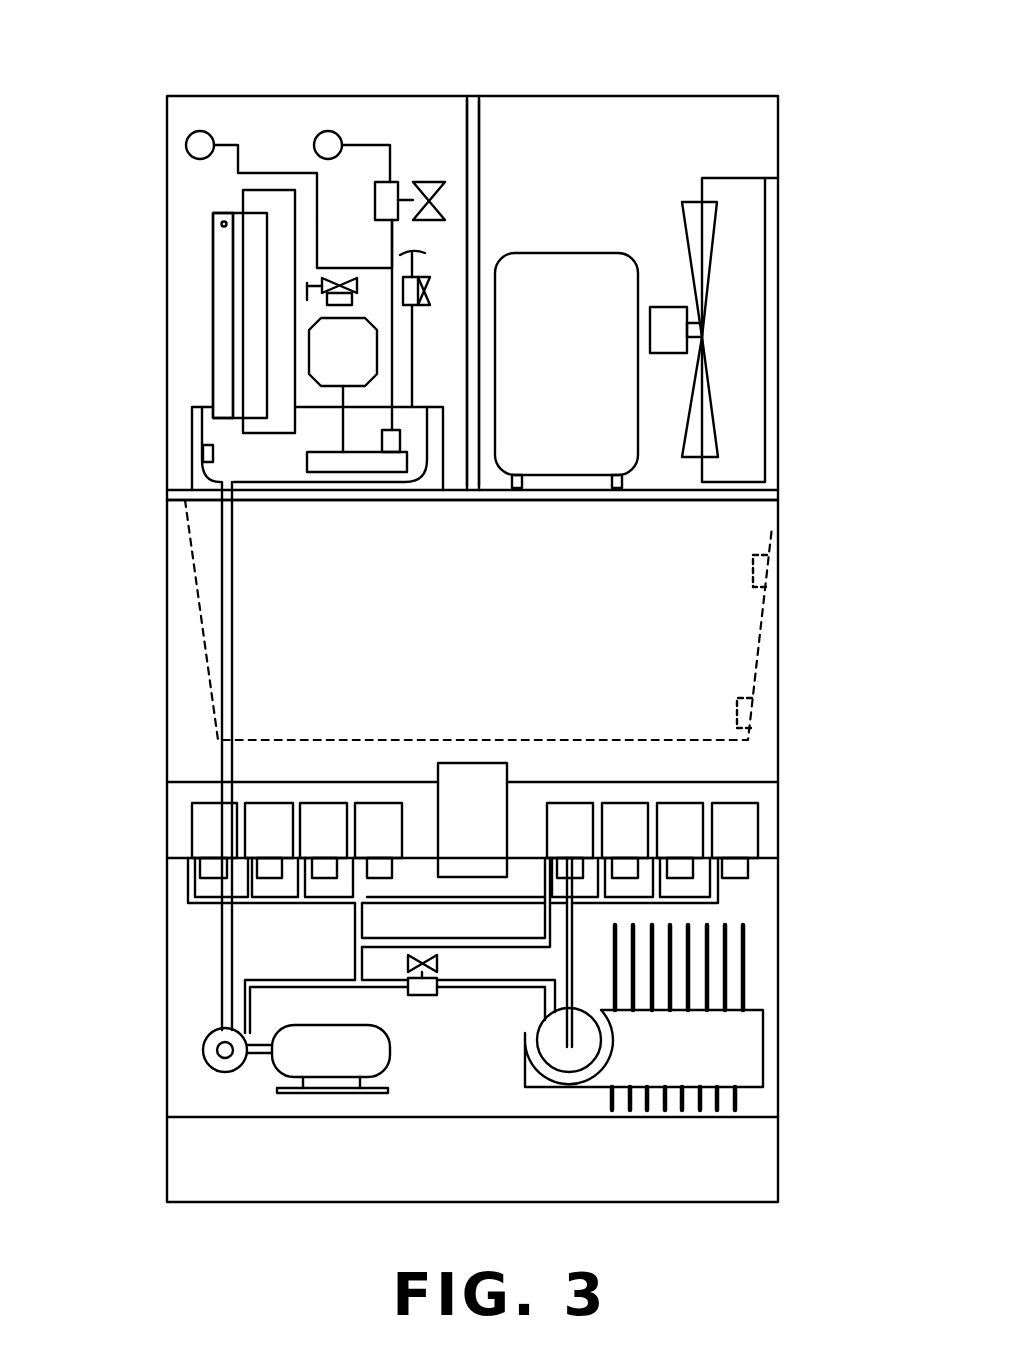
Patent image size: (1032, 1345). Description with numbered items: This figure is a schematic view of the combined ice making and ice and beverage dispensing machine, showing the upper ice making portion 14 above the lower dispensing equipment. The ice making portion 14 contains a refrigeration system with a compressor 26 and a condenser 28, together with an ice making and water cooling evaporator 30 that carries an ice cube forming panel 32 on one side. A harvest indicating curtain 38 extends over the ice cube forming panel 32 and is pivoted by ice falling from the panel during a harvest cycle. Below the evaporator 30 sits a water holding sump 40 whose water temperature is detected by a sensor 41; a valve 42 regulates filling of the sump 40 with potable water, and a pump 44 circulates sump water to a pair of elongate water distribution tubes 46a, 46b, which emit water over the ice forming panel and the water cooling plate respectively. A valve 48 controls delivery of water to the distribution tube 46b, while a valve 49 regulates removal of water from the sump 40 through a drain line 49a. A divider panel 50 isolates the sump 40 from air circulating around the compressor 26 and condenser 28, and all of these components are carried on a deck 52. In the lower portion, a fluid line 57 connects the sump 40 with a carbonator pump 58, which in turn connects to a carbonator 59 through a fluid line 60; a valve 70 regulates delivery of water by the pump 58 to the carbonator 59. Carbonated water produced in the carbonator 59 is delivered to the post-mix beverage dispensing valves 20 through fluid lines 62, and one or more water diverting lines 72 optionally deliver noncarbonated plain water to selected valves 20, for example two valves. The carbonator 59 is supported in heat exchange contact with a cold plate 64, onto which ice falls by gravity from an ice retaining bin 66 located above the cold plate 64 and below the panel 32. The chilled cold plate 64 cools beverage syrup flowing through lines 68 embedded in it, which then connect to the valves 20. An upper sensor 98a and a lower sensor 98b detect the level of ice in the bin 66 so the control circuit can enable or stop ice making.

The upper ice making portion 14 is at (806, 327).
The post-mix beverage dispensing valves 20 is at (263, 828).
The compressor 26 is at (548, 410).
The condenser 28 is at (721, 348).
The ice making and water cooling evaporator 30 is at (225, 242).
The ice cube forming panel 32 is at (238, 373).
The harvest indicating curtain 38 is at (213, 275).
The water holding pan or sump 40 is at (200, 452).
The sensor 41 is at (208, 452).
The valve 42 is at (412, 290).
The pump 44 is at (327, 367).
The water distribution tube 46a is at (201, 131).
The water distribution tube 46b is at (328, 131).
The valve 48 is at (385, 197).
The valve 49 is at (323, 300).
The drain line 49a is at (305, 298).
The divider panel 50 is at (473, 143).
The deck 52 is at (495, 506).
The fluid line 57 is at (232, 647).
The carbonator pump 58 is at (306, 1067).
The carbonator 59 is at (557, 1045).
The fluid line 60 is at (307, 978).
The fluid lines 62 is at (567, 963).
The cold plate 64 is at (661, 1055).
The ice retaining hopper or bin 66 is at (760, 668).
The circuits or lines 68 is at (702, 975).
The valve 70 is at (422, 995).
The water diverting lines 72 is at (355, 922).
The upper sensor 98a is at (763, 570).
The lower sensor 98b is at (748, 710).